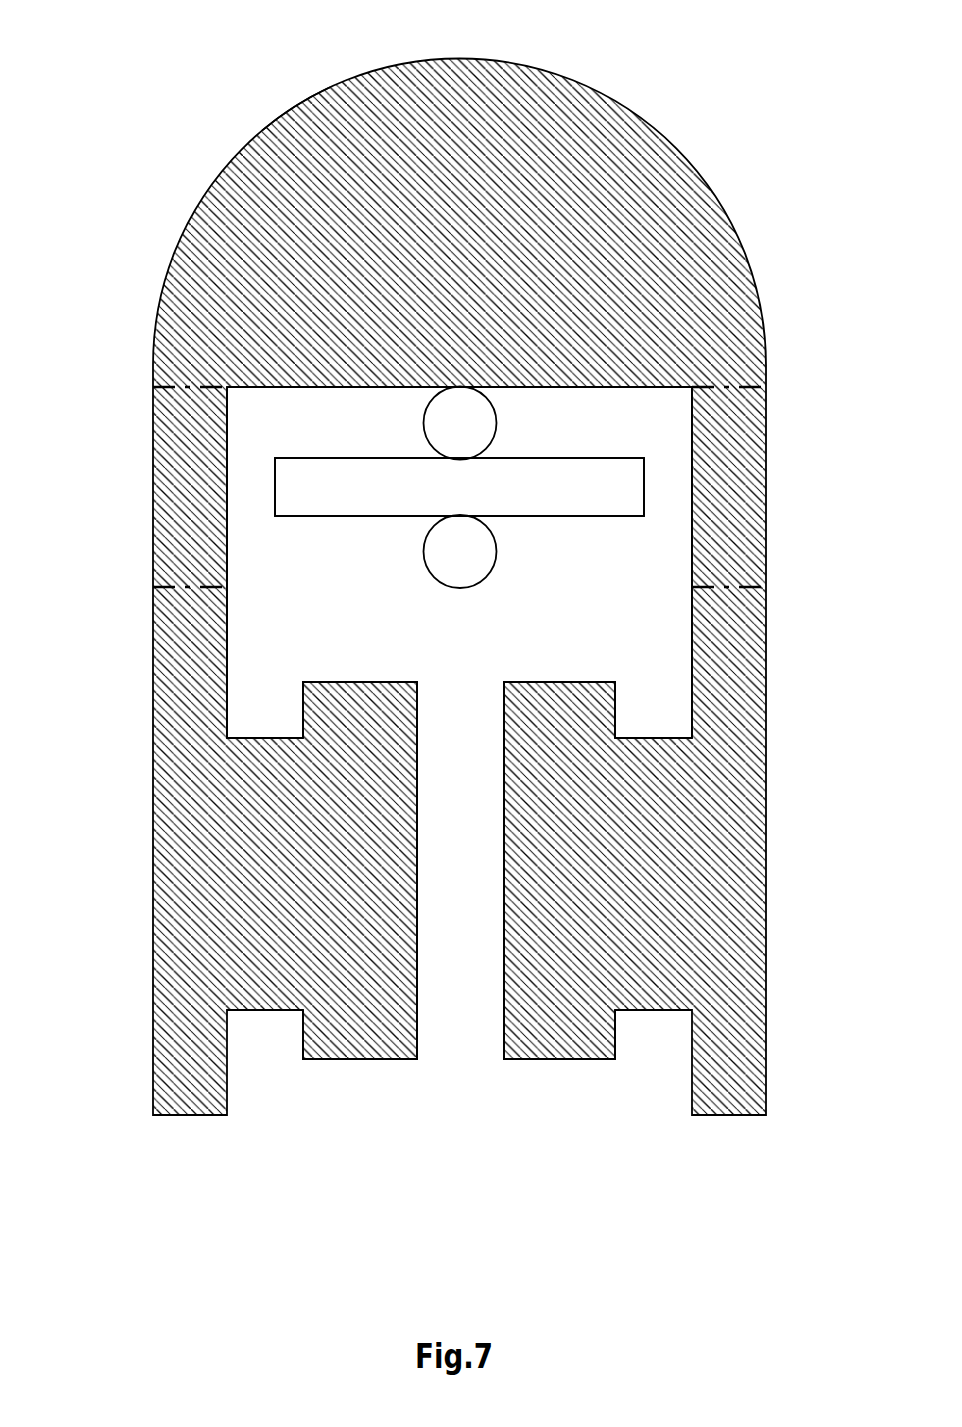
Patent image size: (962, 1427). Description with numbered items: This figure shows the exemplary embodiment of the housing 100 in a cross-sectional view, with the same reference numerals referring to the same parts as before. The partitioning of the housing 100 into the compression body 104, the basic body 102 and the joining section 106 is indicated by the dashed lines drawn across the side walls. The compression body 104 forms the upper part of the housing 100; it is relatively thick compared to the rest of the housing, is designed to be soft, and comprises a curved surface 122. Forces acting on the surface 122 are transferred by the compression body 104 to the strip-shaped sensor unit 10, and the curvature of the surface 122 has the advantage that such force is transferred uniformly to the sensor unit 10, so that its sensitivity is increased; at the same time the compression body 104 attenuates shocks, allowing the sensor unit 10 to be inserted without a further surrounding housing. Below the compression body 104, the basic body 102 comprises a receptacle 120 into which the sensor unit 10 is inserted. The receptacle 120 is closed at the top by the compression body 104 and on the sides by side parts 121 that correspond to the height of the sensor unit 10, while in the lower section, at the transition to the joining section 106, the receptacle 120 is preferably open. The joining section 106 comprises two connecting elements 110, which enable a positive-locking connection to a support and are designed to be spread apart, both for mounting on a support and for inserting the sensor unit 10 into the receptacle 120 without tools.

The housing 100 is at (731, 102).
The compression body 104 is at (162, 187).
The curved surface 122 is at (292, 110).
The joining section 106 is at (105, 958).
The basic body 102 is at (145, 543).
The side parts 121 is at (182, 458).
The sensor unit 10 is at (660, 447).
The receptacle 120 is at (659, 493).
The connecting elements 110 is at (360, 1010).